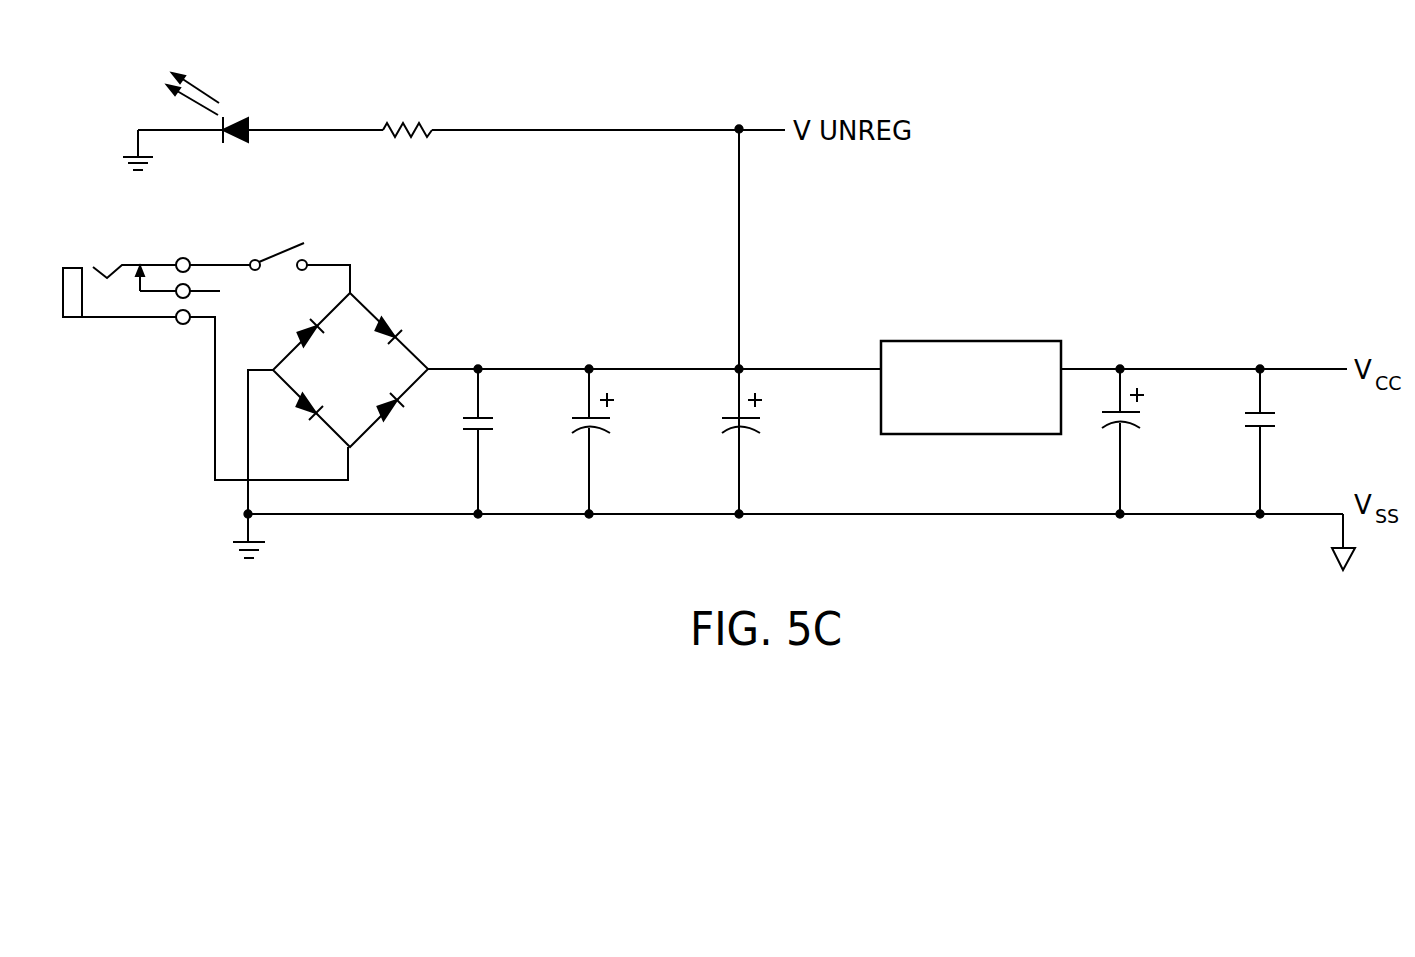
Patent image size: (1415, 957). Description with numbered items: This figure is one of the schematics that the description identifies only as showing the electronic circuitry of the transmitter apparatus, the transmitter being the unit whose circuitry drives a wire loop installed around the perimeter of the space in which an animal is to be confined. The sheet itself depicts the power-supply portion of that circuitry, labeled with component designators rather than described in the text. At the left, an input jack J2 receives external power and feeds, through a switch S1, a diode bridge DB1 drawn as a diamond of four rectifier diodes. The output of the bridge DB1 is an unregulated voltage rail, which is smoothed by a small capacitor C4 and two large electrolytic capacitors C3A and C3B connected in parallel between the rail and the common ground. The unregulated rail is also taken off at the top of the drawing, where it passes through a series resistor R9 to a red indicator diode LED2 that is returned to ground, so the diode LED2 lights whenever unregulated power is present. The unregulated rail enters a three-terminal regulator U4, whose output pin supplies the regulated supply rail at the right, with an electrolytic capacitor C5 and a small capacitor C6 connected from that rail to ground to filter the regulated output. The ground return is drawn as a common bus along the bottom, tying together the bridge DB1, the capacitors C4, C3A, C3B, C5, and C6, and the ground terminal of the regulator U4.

The red light emitting diode LED2 is at (223, 118).
The 1K resistor R9 is at (407, 128).
The power jack J2 is at (205, 350).
The power switch S1 is at (300, 253).
The KBP02H diode bridge rectifier DB1 is at (384, 394).
The 0.1 uF capacitor C4 is at (496, 441).
The 2000 uF 25V electrolytic capacitor C3A is at (631, 441).
The 2000 uF 25V electrolytic capacitor C3B is at (781, 434).
The 7805 voltage regulator U4 is at (971, 357).
The 100 uF 16V electrolytic capacitor C5 is at (1155, 441).
The 0.1 uF capacitor C6 is at (1278, 441).